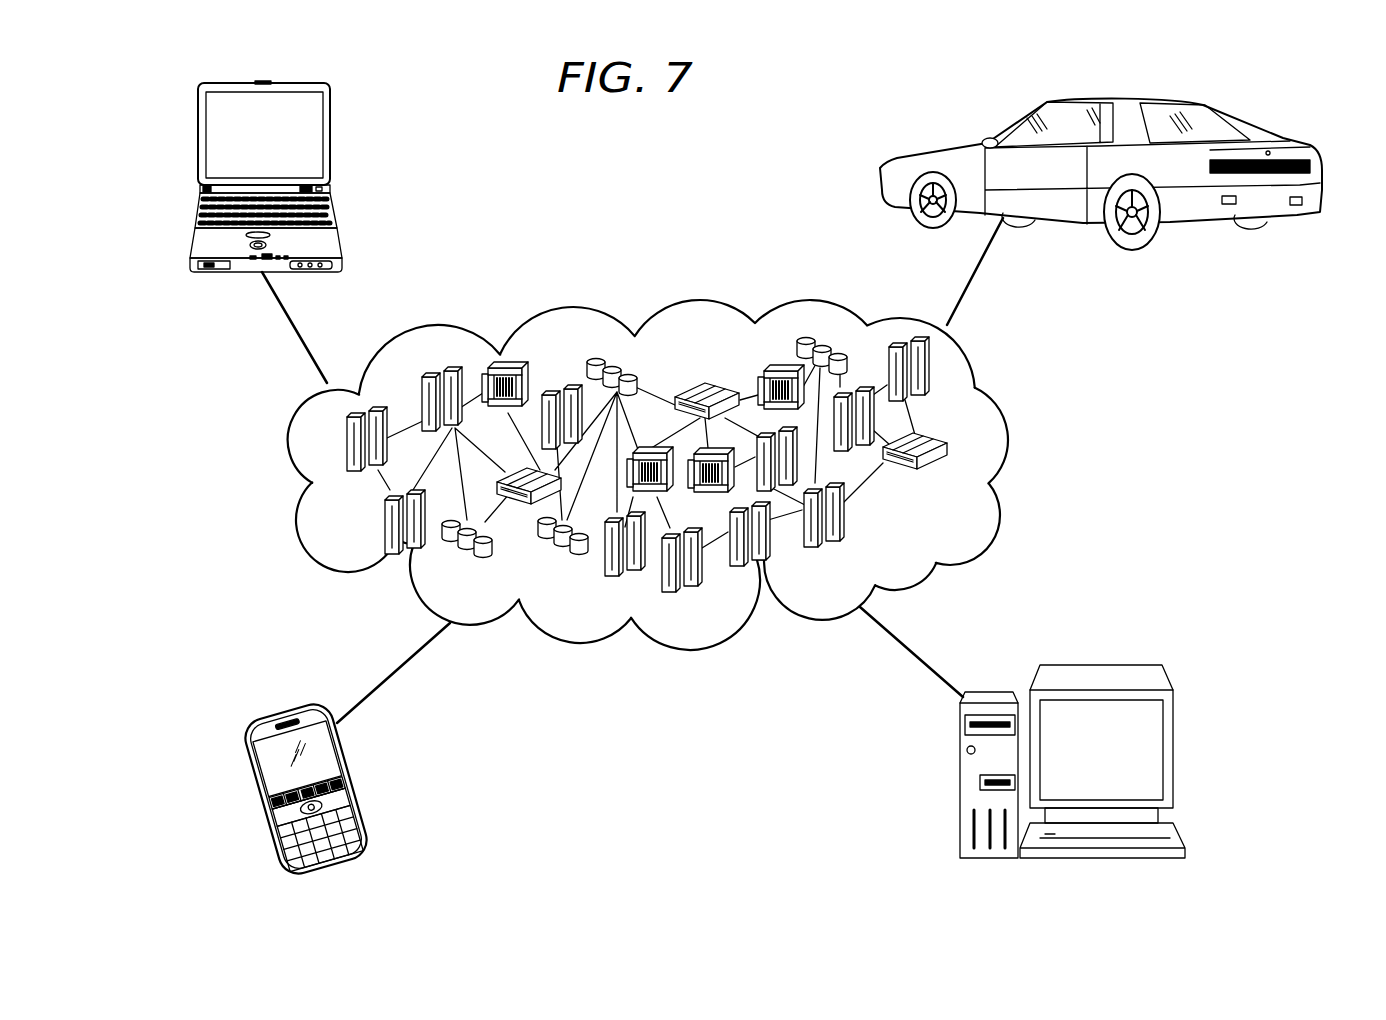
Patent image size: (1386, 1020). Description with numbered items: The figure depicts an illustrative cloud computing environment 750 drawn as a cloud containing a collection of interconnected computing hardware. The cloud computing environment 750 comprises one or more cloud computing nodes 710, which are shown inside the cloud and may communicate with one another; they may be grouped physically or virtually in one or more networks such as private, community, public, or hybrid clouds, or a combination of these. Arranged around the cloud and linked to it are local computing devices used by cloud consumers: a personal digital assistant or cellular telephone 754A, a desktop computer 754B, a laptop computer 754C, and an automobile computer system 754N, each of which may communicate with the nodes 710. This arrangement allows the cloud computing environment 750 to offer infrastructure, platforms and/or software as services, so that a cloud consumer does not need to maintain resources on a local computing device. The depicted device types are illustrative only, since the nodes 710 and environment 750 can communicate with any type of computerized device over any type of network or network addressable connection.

The cellular telephone 754A is at (247, 777).
The desktop computer 754B is at (1100, 665).
The laptop computer 754C is at (197, 124).
The automobile computer system 754N is at (1282, 141).
The cloud computing environment 750 is at (1000, 393).
The cloud computing nodes 710 is at (955, 477).